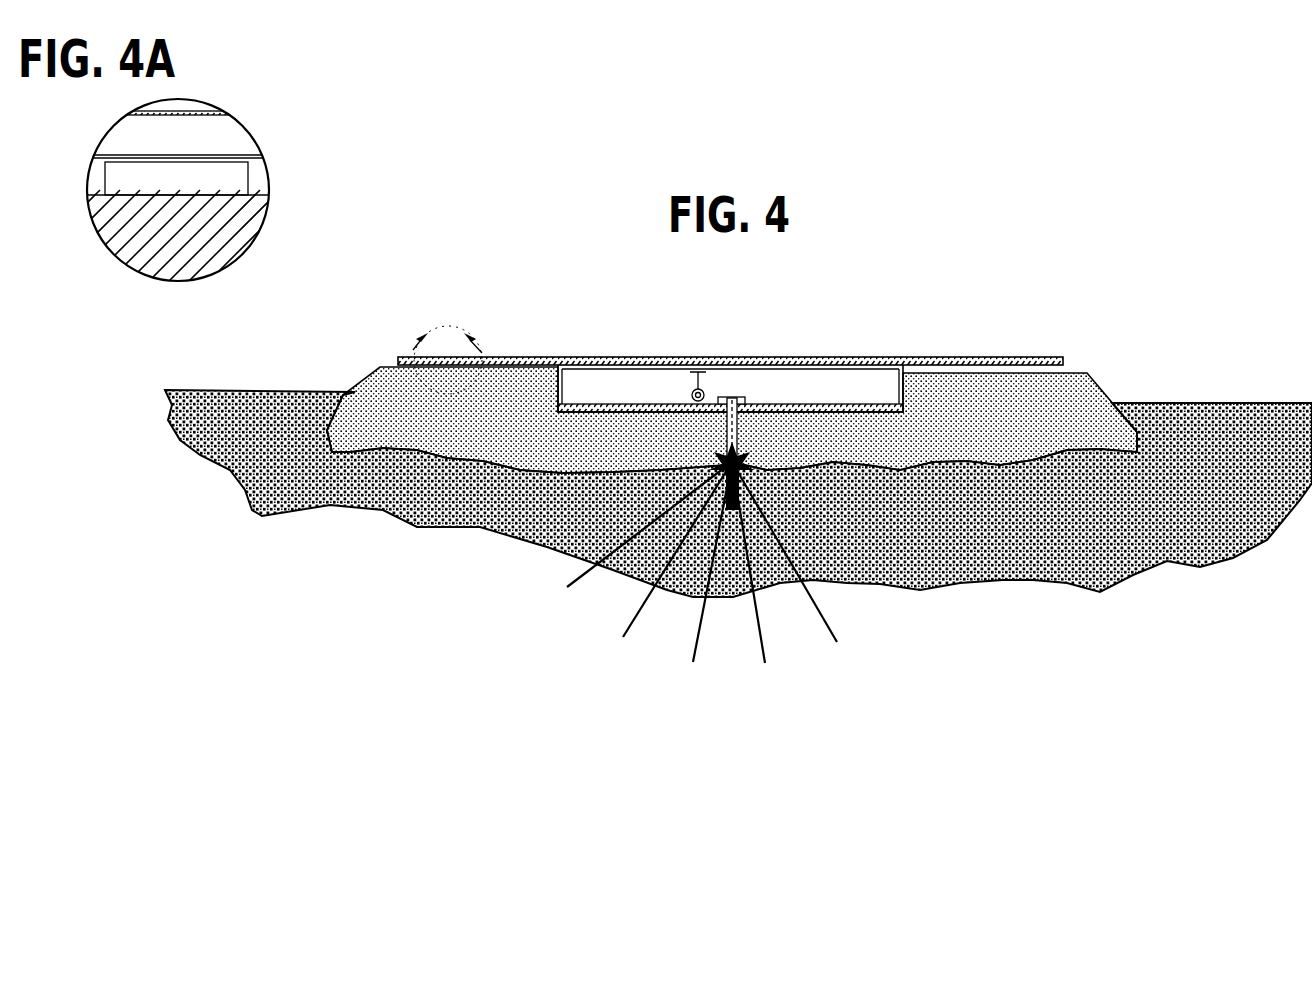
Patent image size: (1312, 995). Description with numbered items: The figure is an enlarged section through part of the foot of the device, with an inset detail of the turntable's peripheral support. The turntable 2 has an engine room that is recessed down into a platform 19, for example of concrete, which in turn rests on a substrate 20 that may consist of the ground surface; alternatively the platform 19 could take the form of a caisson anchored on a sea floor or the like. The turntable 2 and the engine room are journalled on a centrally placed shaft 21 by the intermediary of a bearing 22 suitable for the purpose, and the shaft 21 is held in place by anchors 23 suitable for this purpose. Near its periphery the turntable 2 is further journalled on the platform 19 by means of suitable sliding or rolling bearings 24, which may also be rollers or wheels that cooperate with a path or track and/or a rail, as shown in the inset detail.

In FIG. 4A, the turntable 2 is at (190, 126).
In FIG. 4, the turntable 2 is at (970, 360).
In FIG. 4, the platform 19 is at (1093, 401).
In FIG. 4, the substrate 20 is at (1003, 580).
In FIG. 4, the shaft 21 is at (722, 433).
In FIG. 4, the bearing 22 is at (745, 397).
In FIG. 4, the anchors 23 is at (692, 656).
In FIG. 4A, the sliding or rolling bearings 24 is at (188, 178).